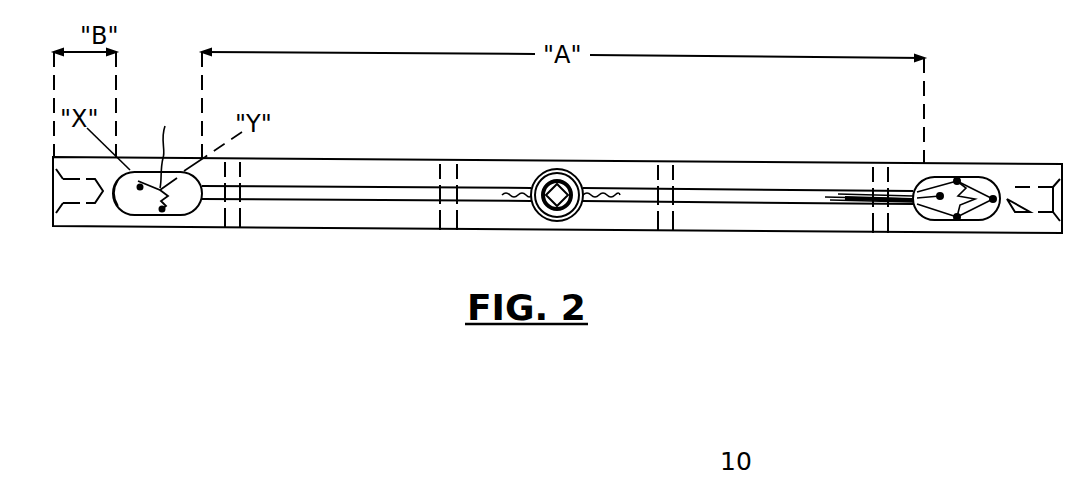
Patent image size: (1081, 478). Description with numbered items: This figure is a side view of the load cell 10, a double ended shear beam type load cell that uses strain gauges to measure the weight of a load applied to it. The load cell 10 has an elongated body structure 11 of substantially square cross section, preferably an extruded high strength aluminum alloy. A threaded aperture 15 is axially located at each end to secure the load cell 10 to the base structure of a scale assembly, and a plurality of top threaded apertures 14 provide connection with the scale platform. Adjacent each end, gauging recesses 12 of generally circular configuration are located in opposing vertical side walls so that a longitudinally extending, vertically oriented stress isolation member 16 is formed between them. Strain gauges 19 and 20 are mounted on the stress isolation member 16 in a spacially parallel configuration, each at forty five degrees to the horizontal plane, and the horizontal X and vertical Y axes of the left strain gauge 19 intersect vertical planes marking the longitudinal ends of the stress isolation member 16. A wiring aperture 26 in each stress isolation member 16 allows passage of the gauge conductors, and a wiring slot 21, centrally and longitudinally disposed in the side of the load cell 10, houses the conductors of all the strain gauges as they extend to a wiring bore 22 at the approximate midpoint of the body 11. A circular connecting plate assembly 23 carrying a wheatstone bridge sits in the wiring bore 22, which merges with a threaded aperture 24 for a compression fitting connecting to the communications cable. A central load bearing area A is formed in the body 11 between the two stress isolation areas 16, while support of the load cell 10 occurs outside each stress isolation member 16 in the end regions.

The load cell 10 is at (987, 111).
The elongated body structure 11 is at (340, 215).
The gauging recess 12 is at (187, 218).
The top threaded aperture 14 is at (450, 162).
The threaded aperture 15 is at (73, 205).
The stress isolation member 16 is at (143, 212).
The strain gauge 19 is at (164, 144).
The strain gauge 20 is at (965, 180).
The wiring slot 21 is at (343, 195).
The wiring bore 22 is at (546, 173).
The connecting plate assembly 23 is at (541, 212).
The threaded aperture 24 is at (567, 212).
The wiring aperture 26 is at (597, 190).